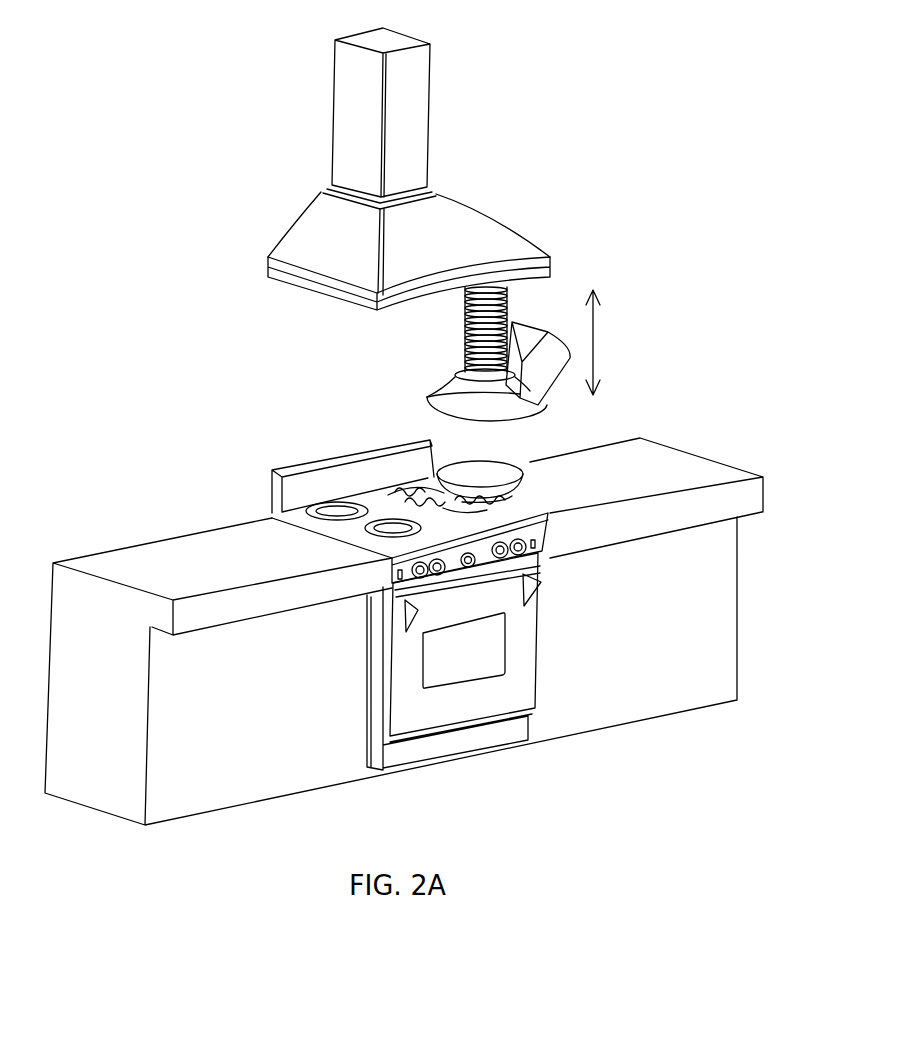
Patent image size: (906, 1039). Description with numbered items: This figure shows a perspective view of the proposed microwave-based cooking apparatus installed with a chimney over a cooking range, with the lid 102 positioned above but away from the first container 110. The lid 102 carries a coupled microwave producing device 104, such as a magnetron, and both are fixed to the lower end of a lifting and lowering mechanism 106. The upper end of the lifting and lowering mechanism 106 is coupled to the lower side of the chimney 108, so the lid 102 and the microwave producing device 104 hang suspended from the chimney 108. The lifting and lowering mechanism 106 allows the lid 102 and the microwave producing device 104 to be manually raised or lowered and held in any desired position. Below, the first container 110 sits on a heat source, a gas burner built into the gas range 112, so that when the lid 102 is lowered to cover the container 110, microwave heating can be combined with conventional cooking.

The lid 102 is at (432, 396).
The microwave producing device 104 is at (540, 368).
The lifting and lowering mechanism 106 is at (507, 315).
The chimney 108 is at (490, 233).
The first container 110 is at (497, 477).
The gas range 112 is at (583, 510).